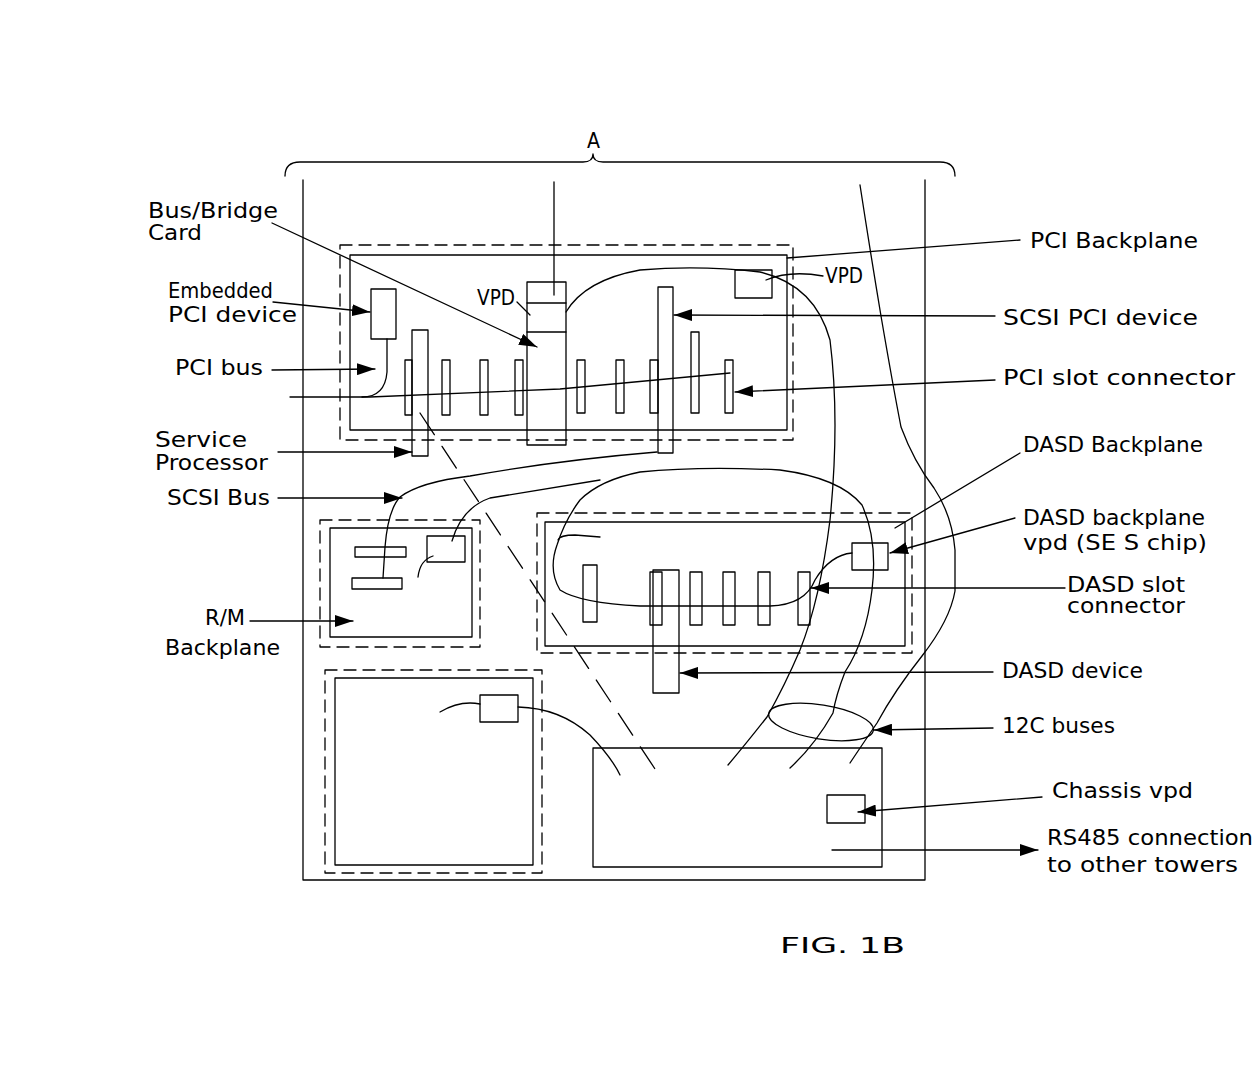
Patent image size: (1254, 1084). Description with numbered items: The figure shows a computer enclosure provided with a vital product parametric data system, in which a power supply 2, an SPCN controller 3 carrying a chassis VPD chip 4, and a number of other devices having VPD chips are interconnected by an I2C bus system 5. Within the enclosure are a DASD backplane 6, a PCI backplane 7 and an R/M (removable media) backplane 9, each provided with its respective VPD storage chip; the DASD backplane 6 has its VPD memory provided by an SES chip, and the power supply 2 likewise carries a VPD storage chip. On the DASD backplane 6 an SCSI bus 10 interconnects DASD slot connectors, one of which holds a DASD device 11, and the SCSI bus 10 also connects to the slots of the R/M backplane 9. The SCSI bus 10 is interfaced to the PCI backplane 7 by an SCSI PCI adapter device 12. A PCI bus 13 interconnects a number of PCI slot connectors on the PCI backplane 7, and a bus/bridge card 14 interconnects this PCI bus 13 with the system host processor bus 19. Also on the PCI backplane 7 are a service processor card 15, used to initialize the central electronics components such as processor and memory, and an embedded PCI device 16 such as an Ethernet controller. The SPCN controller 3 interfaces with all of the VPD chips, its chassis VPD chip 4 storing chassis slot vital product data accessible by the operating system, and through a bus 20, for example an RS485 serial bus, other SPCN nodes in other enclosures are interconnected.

The power supply 2 is at (376, 848).
The SPCN controller 3 is at (627, 852).
The chassis VPD chip 4 is at (860, 803).
The I2C bus system 5 is at (878, 720).
The DASD backplane 6 is at (978, 479).
The PCI backplane 7 is at (968, 245).
The R/M (Removable Media) backplane 9 is at (340, 563).
The SCSI bus 10 is at (554, 557).
The DASD device 11 is at (667, 687).
The SCSI PCI adapter device 12 is at (657, 316).
The PCI bus 13 is at (499, 373).
The bus/bridge card 14 is at (562, 283).
The service processor card 15 is at (418, 457).
The embedded PCI device 16 is at (390, 310).
The system host (processor) bus 19 is at (553, 220).
The bus 20 is at (957, 851).